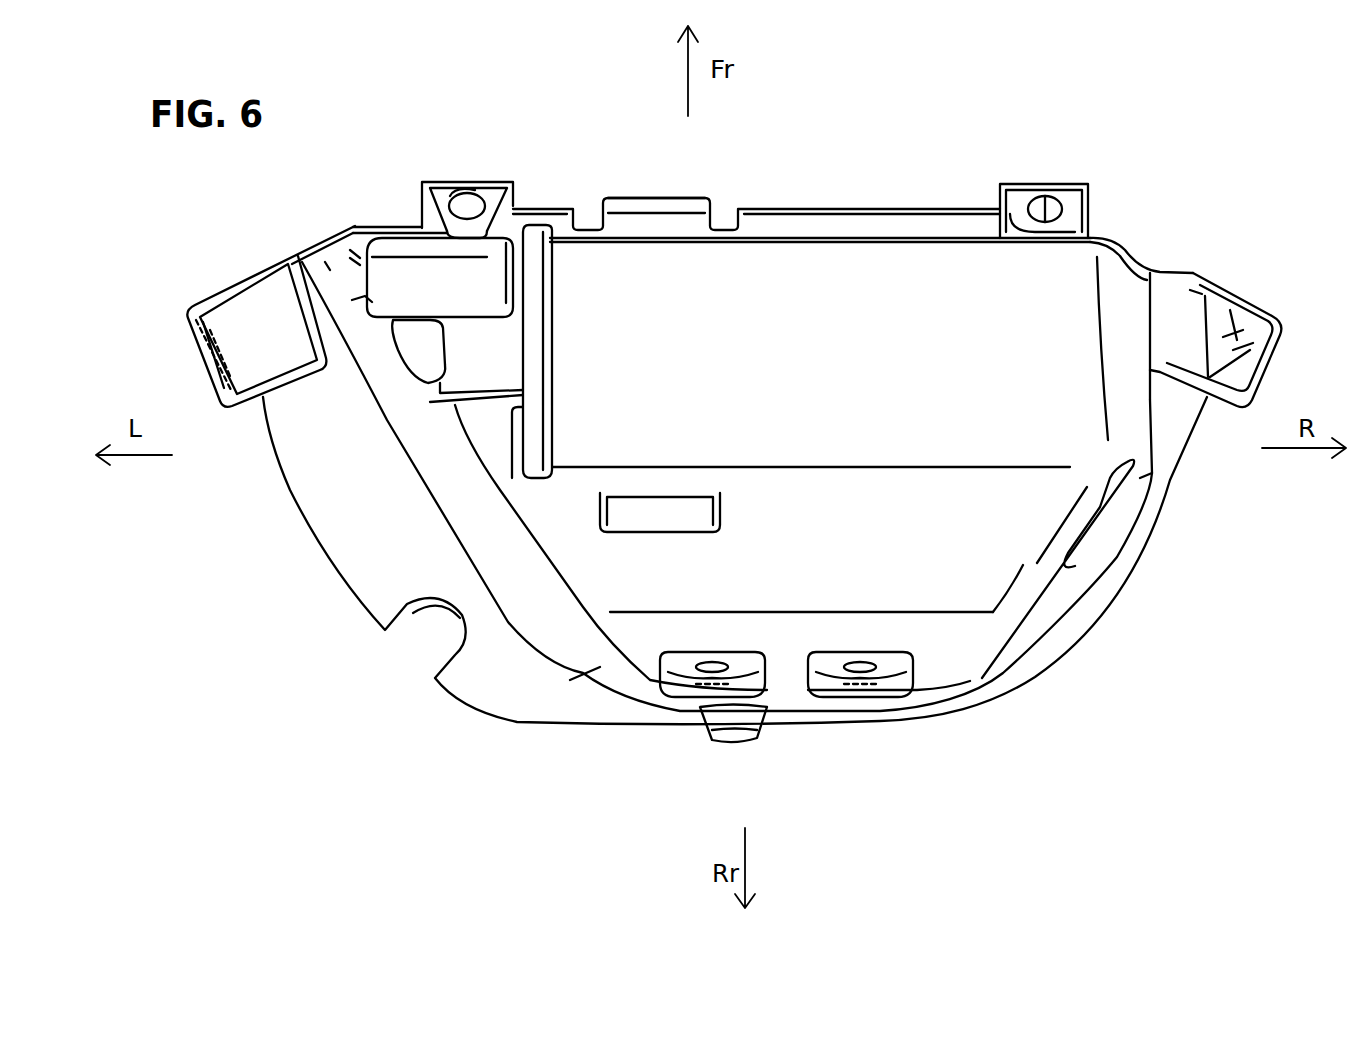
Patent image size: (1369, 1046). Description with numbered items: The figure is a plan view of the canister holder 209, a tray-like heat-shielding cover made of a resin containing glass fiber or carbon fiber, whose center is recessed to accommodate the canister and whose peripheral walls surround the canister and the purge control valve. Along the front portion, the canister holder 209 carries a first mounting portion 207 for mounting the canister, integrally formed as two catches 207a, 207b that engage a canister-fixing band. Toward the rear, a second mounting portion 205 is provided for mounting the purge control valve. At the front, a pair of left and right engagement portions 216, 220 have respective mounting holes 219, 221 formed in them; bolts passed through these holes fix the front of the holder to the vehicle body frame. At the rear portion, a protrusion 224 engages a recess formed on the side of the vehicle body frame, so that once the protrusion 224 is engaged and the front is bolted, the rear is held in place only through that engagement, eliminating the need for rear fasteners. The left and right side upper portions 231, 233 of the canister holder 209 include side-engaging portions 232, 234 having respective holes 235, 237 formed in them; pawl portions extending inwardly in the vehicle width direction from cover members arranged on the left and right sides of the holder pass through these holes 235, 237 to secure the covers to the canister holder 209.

The second mounting portion 205 is at (865, 695).
The first mounting portion 207 is at (698, 188).
The catch 207a is at (615, 196).
The catch 207b is at (633, 533).
The canister holder 209 is at (872, 207).
The engagement portion 216 is at (422, 200).
The mounting hole 219 is at (462, 196).
The engagement portion 220 is at (1090, 202).
The mounting hole 221 is at (1052, 202).
The protrusion 224 is at (717, 720).
The left side upper portion 231 is at (300, 403).
The side-engaging portion 232 is at (222, 280).
The right side upper portion 233 is at (1135, 303).
The side-engaging portion 234 is at (1283, 350).
The hole 235 is at (198, 350).
The hole 237 is at (1247, 315).